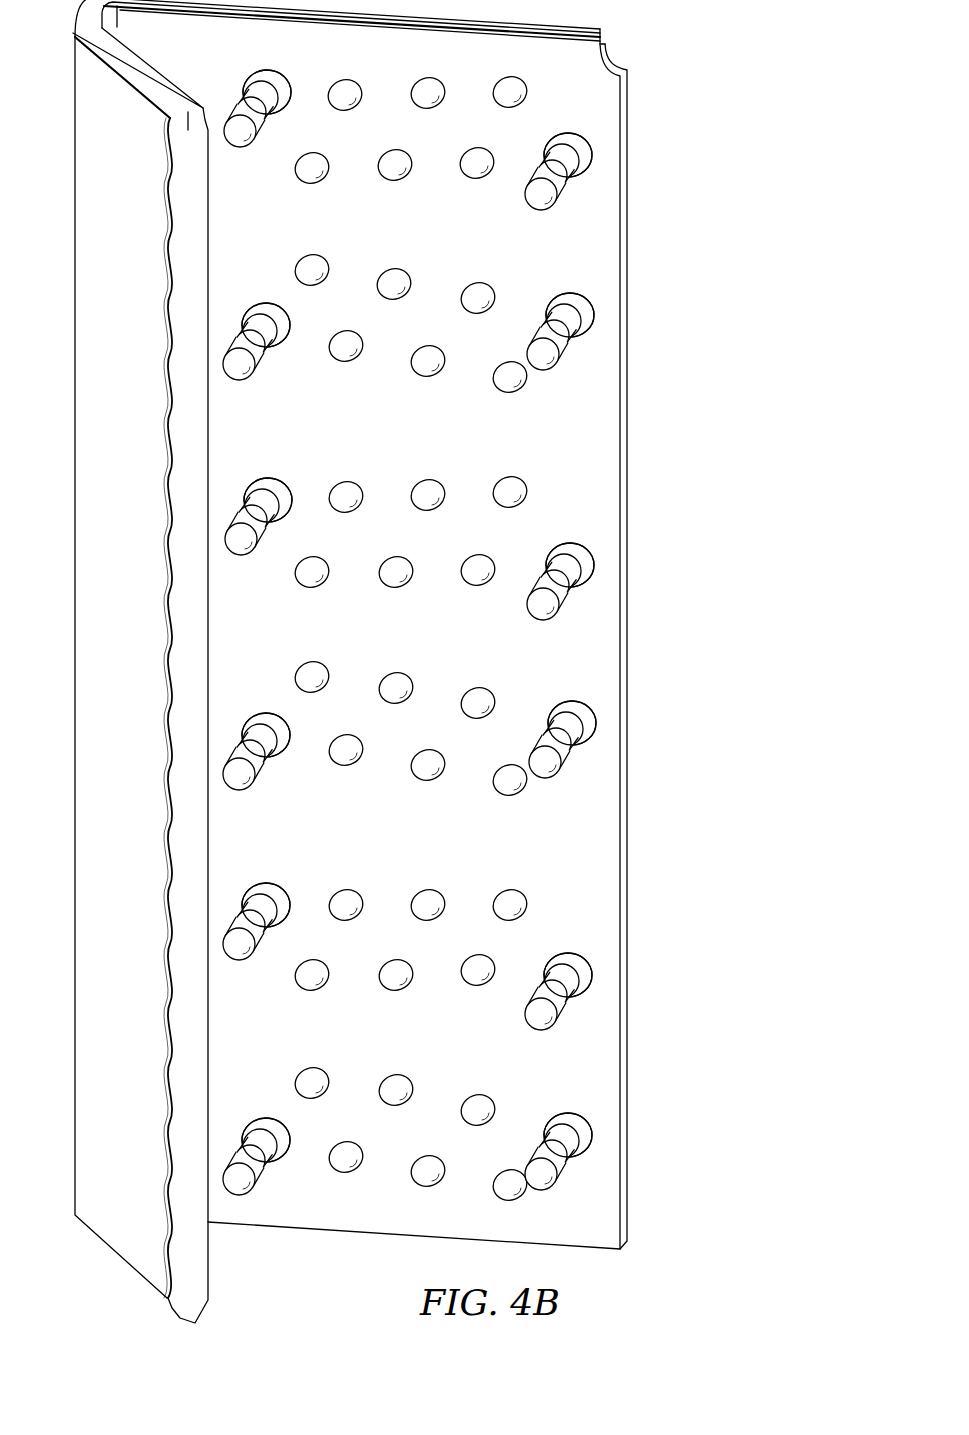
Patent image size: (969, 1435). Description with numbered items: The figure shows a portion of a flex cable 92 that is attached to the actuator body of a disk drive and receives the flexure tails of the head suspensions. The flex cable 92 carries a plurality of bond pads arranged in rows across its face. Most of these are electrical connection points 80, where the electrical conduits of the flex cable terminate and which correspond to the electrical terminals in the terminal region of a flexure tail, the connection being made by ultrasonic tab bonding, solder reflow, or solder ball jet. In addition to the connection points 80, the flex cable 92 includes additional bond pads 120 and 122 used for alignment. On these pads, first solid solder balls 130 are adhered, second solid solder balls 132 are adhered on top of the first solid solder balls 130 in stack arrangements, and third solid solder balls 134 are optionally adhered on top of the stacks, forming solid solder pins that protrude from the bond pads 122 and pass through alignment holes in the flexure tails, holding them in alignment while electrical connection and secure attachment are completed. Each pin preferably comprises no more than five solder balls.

The electrical connection points 80 is at (315, 254).
The flex cable 92 is at (87, 662).
The bond pads 120 is at (248, 76).
The bond pads 122 is at (566, 292).
The first solid solder balls 130 is at (590, 334).
The second solid solder balls 132 is at (272, 540).
The third solid solder balls 134 is at (242, 556).